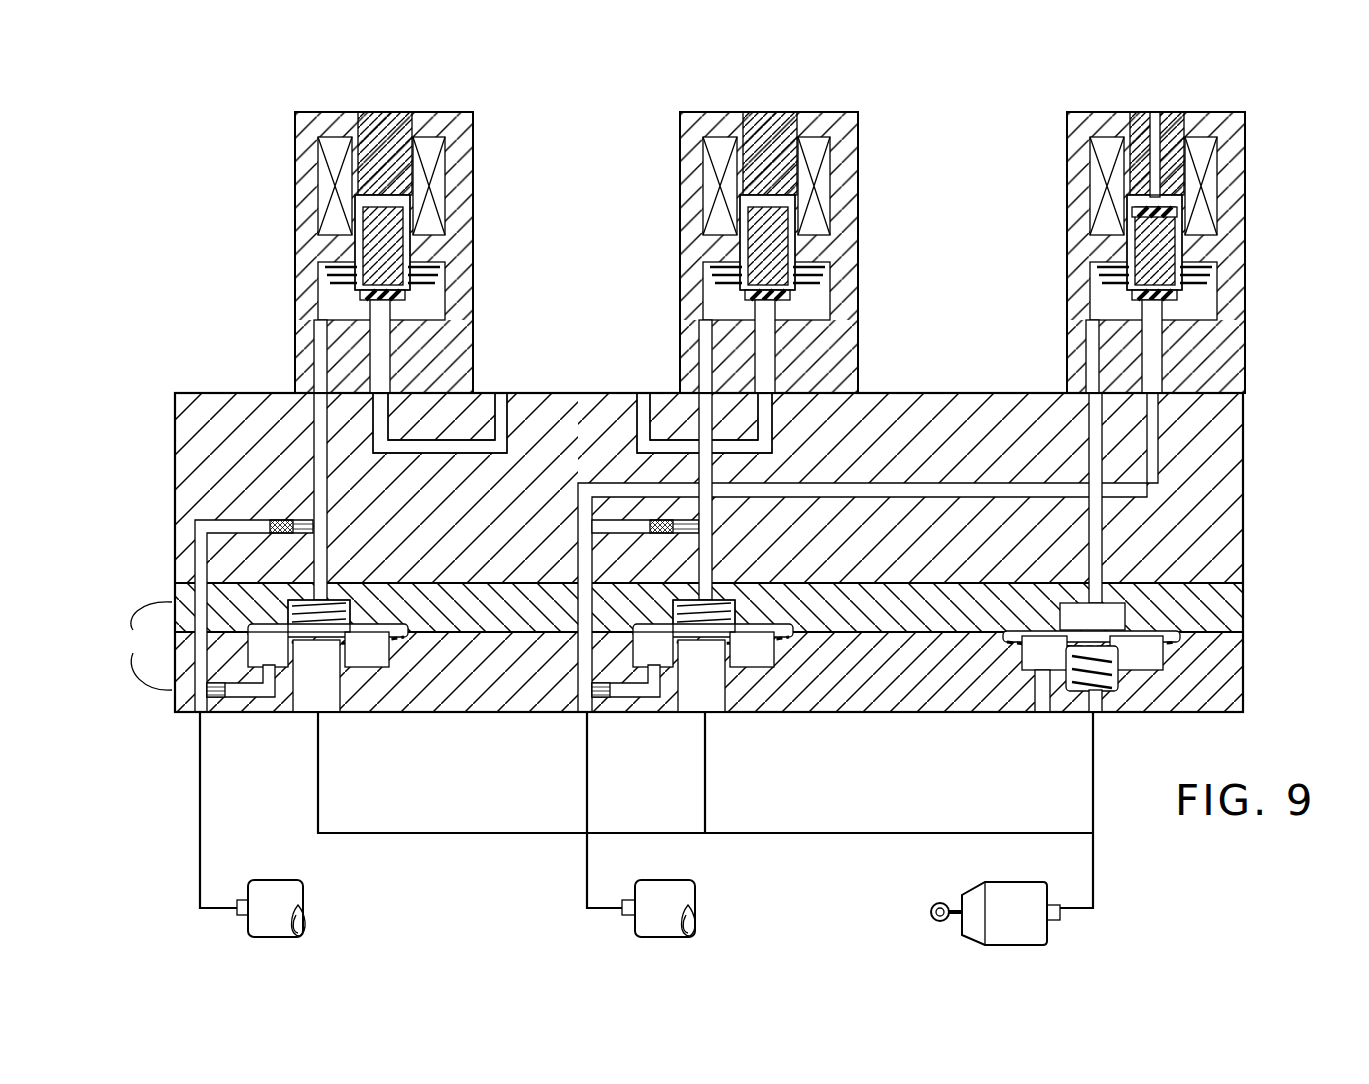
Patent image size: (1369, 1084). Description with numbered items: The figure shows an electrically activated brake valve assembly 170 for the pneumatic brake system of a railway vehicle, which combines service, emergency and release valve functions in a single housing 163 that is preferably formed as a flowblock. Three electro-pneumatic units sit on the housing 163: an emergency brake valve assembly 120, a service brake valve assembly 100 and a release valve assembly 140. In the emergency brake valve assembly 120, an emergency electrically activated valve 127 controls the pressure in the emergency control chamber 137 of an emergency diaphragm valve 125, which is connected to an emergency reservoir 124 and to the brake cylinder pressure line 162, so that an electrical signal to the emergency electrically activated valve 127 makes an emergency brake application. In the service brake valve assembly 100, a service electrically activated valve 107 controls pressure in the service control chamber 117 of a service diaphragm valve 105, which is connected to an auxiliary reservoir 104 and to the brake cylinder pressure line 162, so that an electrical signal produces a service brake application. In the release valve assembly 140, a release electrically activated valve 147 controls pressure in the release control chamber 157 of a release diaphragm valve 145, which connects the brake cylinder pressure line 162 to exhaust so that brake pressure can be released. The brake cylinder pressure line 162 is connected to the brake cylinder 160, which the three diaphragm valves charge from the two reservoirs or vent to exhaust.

The electro-pneumatic emergency brake valve assembly 120 is at (395, 252).
The electrically activated service brake valve assembly 100 is at (780, 252).
The electro-pneumatic release valve assembly 140 is at (1171, 252).
The emergency electrically activated valve 127 is at (343, 249).
The service electrically activated valve 107 is at (725, 252).
The release electrically activated valve 147 is at (1108, 252).
The electrically activated brake valve assembly 170 is at (712, 505).
The housing 163 is at (1272, 470).
The release diaphragm valve 145 is at (1131, 627).
The emergency control chamber 137 is at (275, 625).
The emergency diaphragm valve 125 is at (362, 608).
The service diaphragm valve 105 is at (748, 610).
The service control chamber 117 is at (673, 609).
The release control chamber 157 is at (1060, 620).
The emergency reservoir 124 is at (293, 893).
The auxiliary reservoir 104 is at (681, 893).
The brake cylinder 160 is at (993, 888).
The brake cylinder pressure line 162 is at (503, 830).